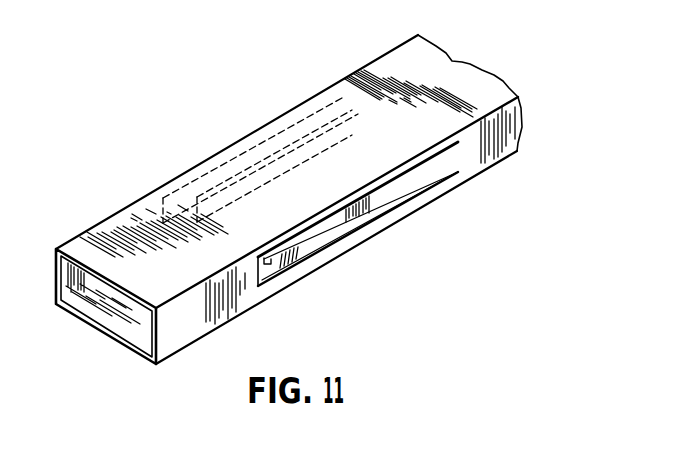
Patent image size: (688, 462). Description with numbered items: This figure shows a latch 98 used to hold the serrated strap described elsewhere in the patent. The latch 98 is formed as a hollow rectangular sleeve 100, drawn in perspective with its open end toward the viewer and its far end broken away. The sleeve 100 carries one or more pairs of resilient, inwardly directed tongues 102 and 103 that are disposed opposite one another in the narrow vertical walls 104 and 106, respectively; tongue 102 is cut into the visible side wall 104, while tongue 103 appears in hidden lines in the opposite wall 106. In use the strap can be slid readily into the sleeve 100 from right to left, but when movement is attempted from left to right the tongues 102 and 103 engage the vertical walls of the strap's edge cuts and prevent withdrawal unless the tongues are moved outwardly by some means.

The latch 98 is at (331, 199).
The hollow rectangular sleeve 100 is at (278, 291).
The resilient, inwardly directed tongue 102 is at (405, 183).
The resilient, inwardly directed tongue 103 is at (212, 197).
The narrow vertical wall 104 is at (512, 112).
The narrow vertical wall 106 is at (309, 118).